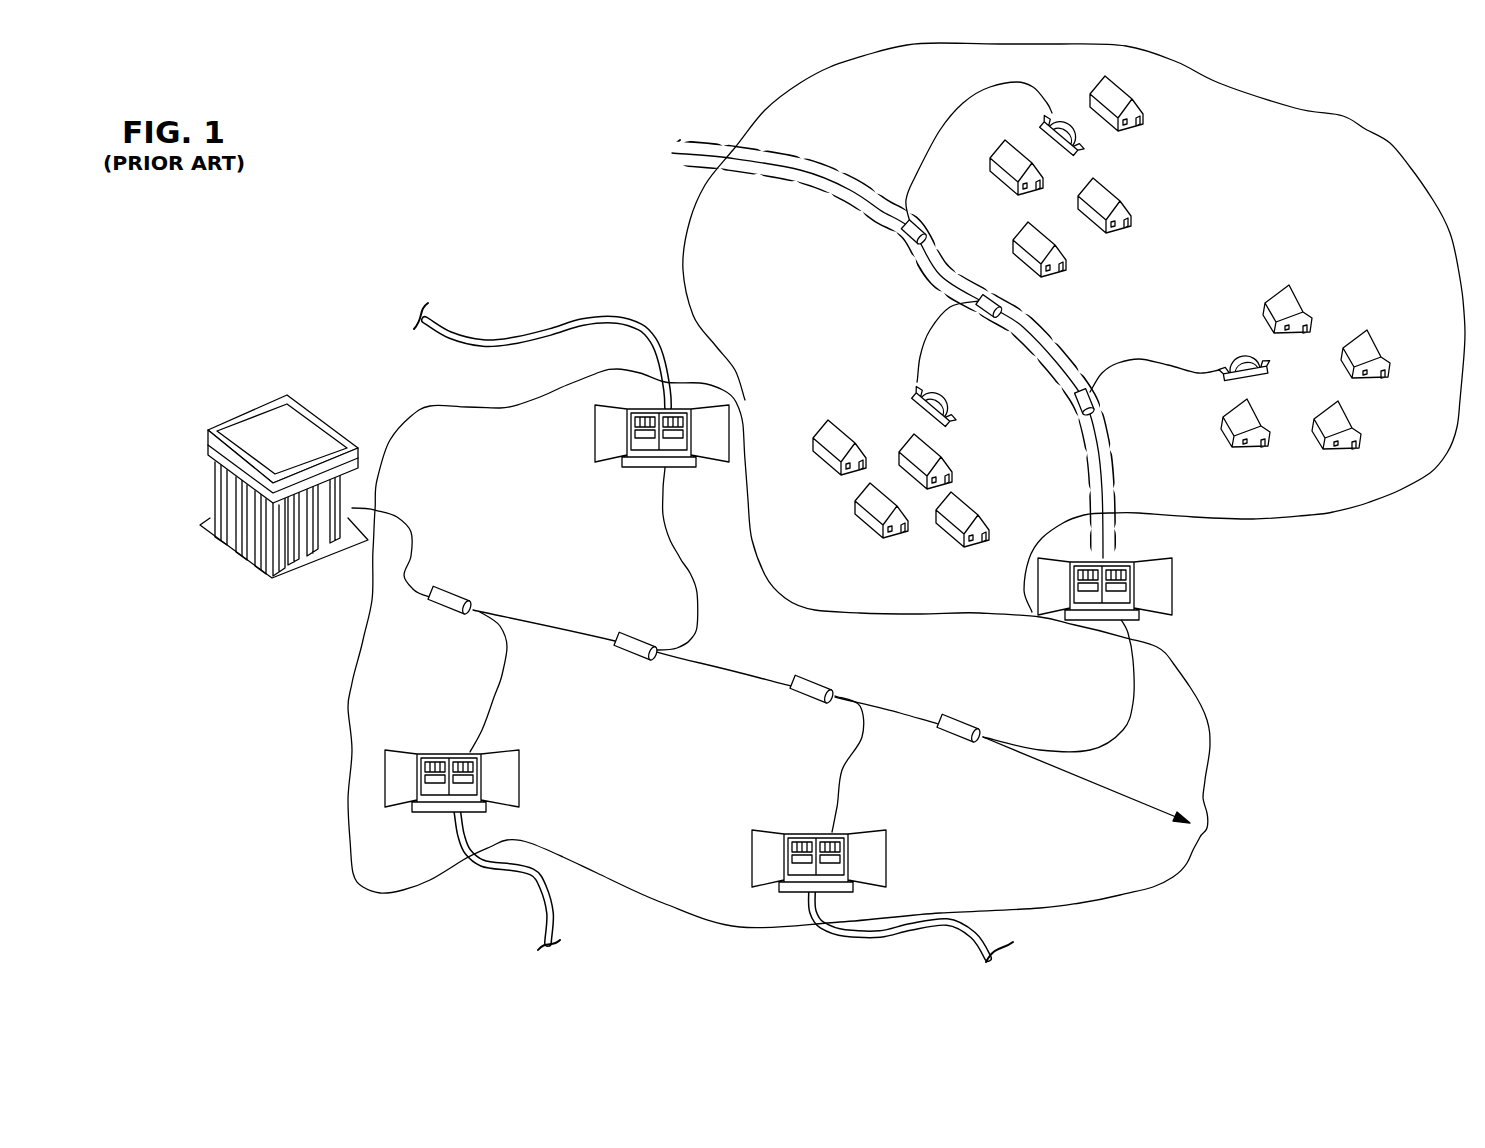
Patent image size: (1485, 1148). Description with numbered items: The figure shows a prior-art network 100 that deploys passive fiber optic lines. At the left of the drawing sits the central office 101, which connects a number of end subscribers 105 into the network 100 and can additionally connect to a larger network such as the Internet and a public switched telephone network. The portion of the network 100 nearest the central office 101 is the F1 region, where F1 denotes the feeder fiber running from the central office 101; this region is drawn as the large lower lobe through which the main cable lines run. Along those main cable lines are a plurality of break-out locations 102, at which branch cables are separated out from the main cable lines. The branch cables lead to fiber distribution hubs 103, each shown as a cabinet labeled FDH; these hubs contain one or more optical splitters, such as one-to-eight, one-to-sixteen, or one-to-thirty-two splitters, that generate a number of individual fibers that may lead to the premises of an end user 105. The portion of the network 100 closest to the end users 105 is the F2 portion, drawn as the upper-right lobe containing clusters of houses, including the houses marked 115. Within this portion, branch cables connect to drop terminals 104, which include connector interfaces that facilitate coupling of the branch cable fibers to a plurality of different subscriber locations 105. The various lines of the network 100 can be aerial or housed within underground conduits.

The network 100 is at (463, 218).
The central office 101 is at (213, 482).
The break-out location 102 is at (440, 593).
The fiber distribution hub 103 is at (717, 458).
The drop terminal 104 is at (923, 387).
The end subscriber 105 is at (1116, 193).
The subscriber premises (houses) 115 is at (990, 512).
The F1 region F1 is at (1210, 760).
The F2 portion F2 is at (1345, 117).